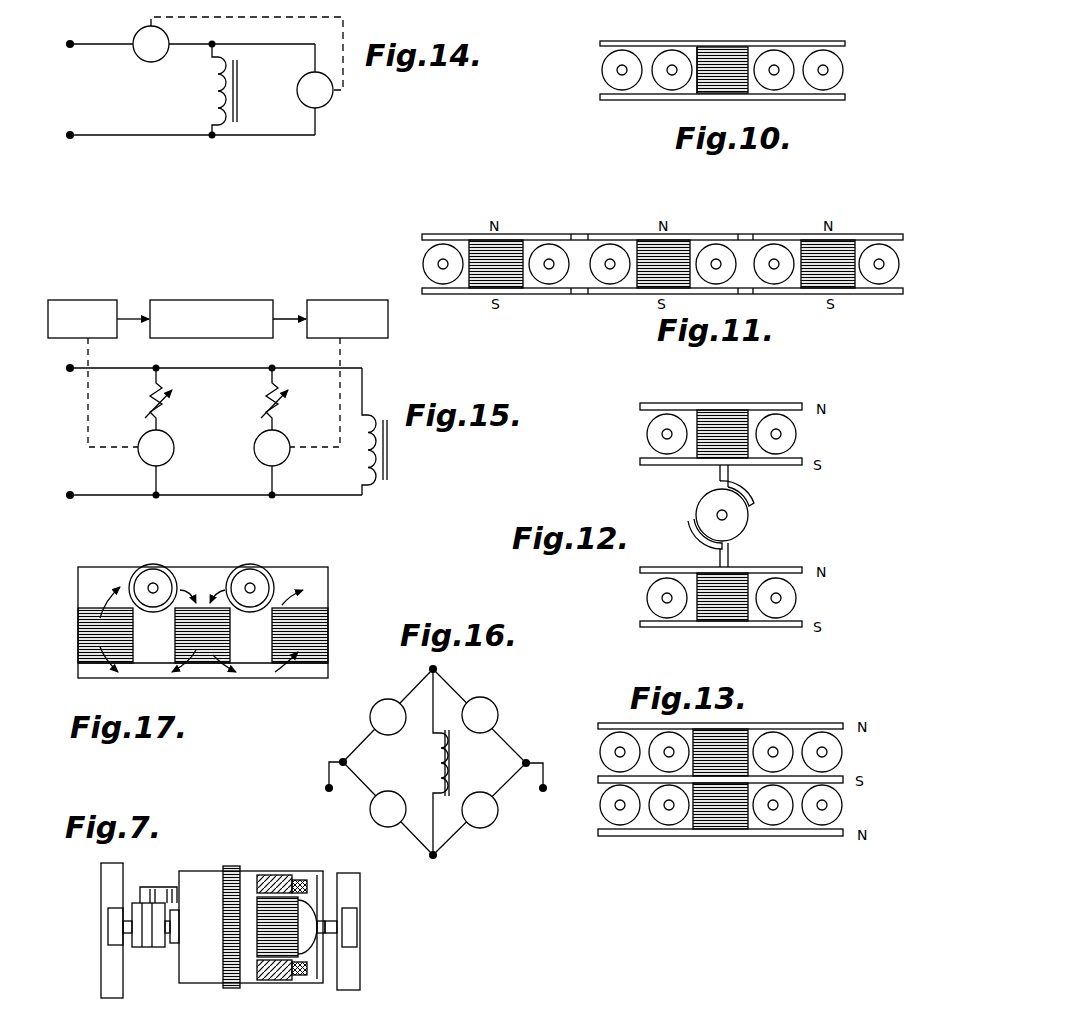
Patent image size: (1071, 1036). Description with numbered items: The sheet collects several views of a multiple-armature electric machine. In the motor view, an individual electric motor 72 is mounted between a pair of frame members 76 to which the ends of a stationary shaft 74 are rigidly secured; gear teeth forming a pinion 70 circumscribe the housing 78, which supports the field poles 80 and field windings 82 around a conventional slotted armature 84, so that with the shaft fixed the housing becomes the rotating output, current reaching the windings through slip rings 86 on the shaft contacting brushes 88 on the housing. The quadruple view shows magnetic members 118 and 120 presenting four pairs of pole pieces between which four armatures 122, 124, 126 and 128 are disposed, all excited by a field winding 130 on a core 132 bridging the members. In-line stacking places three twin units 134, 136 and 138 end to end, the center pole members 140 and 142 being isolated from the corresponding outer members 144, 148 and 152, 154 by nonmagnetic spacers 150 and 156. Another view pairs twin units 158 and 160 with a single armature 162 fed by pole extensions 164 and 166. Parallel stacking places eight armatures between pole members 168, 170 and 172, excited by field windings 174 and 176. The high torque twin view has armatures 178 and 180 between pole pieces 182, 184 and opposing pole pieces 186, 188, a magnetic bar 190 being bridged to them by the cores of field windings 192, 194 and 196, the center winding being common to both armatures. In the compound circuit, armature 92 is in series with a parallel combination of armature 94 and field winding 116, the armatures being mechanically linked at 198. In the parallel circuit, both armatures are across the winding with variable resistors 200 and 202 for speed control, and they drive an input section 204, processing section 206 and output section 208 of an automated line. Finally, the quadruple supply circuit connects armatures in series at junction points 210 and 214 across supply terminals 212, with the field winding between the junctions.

In FIG. 7, the pinion 70 is at (233, 866).
In FIG. 7, the electric motor 72 is at (270, 876).
In FIG. 7, the shaft 74 is at (350, 900).
In FIG. 7, the frame members 76 is at (101, 904).
In FIG. 7, the housing 78 is at (205, 984).
In FIG. 7, the field poles 80 is at (272, 980).
In FIG. 7, the field windings 82 is at (300, 975).
In FIG. 7, the slotted armature 84 is at (300, 902).
In FIG. 7, the slip rings 86 is at (148, 948).
In FIG. 7, the brushes 88 is at (140, 895).
In FIG. 14, the armature 92 is at (143, 60).
In FIG. 15, the armature 92 is at (147, 466).
In FIG. 14, the armature 94 is at (331, 97).
In FIG. 15, the armature 94 is at (260, 465).
In FIG. 14, the field winding 116 is at (216, 93).
In FIG. 15, the field winding 116 is at (360, 468).
In FIG. 10, the magnetic member 118 is at (754, 45).
In FIG. 10, the magnetic member 120 is at (845, 100).
In FIG. 10, the armature 122 is at (602, 69).
In FIG. 16, the armature 122 is at (377, 705).
In FIG. 10, the armature 124 is at (680, 90).
In FIG. 16, the armature 124 is at (497, 708).
In FIG. 10, the armature 126 is at (776, 52).
In FIG. 16, the armature 126 is at (497, 822).
In FIG. 10, the armature 128 is at (838, 62).
In FIG. 16, the armature 128 is at (371, 812).
In FIG. 10, the field winding 130 is at (722, 52).
In FIG. 16, the field winding 130 is at (430, 770).
In FIG. 10, the core 132 is at (700, 44).
In FIG. 11, the twin armature unit 134 is at (505, 234).
In FIG. 11, the twin armature unit 136 is at (618, 235).
In FIG. 11, the twin armature unit 138 is at (798, 235).
In FIG. 11, the pole member 140 is at (678, 233).
In FIG. 11, the pole member 142 is at (618, 296).
In FIG. 11, the pole member 144 is at (440, 233).
In FIG. 11, the pole member 148 is at (872, 234).
In FIG. 11, the nonmagnetic spacers 150 is at (580, 233).
In FIG. 11, the pole member 152 is at (426, 296).
In FIG. 11, the pole member 154 is at (866, 296).
In FIG. 11, the nonmagnetic spacers 156 is at (578, 296).
In FIG. 12, the twin armature unit 158 is at (774, 403).
In FIG. 12, the twin armature unit 160 is at (797, 567).
In FIG. 12, the single armature 162 is at (752, 522).
In FIG. 12, the extension 164 is at (750, 490).
In FIG. 12, the extension 166 is at (695, 545).
In FIG. 13, the pole member 168 is at (825, 723).
In FIG. 13, the common pole member 170 is at (840, 778).
In FIG. 13, the lower pole member 172 is at (840, 829).
In FIG. 13, the field winding 174 is at (735, 740).
In FIG. 13, the field winding 176 is at (725, 838).
In FIG. 17, the armature 178 is at (150, 572).
In FIG. 17, the armature 180 is at (252, 572).
In FIG. 17, the pole piece 182 is at (180, 573).
In FIG. 17, the pole piece 184 is at (224, 568).
In FIG. 17, the pole piece 186 is at (125, 566).
In FIG. 17, the pole piece 188 is at (277, 567).
In FIG. 17, the bar 190 is at (203, 678).
In FIG. 17, the field winding 192 is at (88, 630).
In FIG. 17, the center field winding 194 is at (222, 636).
In FIG. 17, the field winding 196 is at (322, 620).
In FIG. 14, the rotative mechanical interconnection 198 is at (320, 17).
In FIG. 15, the variable resistor 200 is at (172, 404).
In FIG. 15, the variable resistor 202 is at (278, 412).
In FIG. 15, the input section 204 is at (76, 299).
In FIG. 15, the processing section 206 is at (200, 299).
In FIG. 15, the output section 208 is at (340, 299).
In FIG. 16, the junction point 210 is at (432, 669).
In FIG. 16, the supply terminals 212 is at (325, 788).
In FIG. 16, the junction point 214 is at (433, 860).